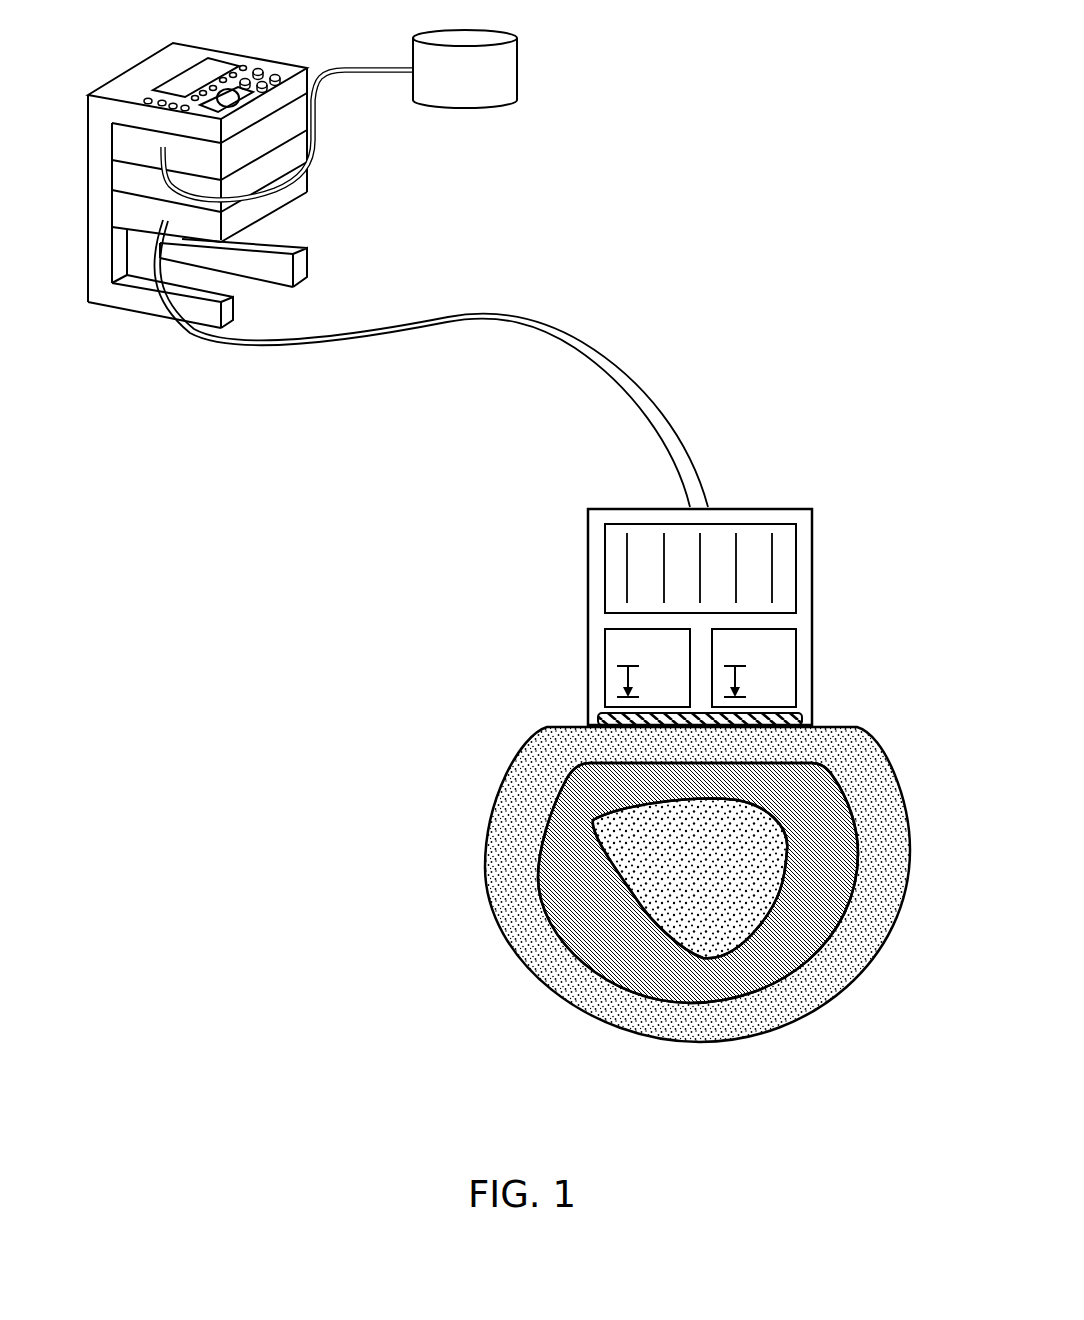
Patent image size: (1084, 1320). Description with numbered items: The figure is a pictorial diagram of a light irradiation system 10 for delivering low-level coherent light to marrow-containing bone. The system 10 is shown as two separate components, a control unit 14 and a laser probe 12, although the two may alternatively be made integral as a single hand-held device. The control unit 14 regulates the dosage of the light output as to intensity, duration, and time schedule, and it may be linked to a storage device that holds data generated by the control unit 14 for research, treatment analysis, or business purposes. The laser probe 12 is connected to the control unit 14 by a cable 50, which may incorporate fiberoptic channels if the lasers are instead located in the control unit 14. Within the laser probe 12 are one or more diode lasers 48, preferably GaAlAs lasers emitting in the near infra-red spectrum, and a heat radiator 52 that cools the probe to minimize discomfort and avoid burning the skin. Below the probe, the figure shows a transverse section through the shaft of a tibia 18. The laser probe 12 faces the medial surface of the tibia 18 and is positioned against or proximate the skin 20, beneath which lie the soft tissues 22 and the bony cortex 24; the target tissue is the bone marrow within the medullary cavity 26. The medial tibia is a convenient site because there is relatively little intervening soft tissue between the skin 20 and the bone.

The light irradiation system 10 is at (672, 178).
The laser probe 12 is at (697, 585).
The control unit 14 is at (307, 177).
The tibia 18 is at (635, 886).
The skin 20 is at (567, 725).
The soft tissues 22 is at (600, 1003).
The bony cortex 24 is at (562, 868).
The medullary cavity 26 is at (723, 945).
The diode lasers 48 is at (605, 637).
The cable 50 is at (443, 322).
The heat radiator 52 is at (743, 523).